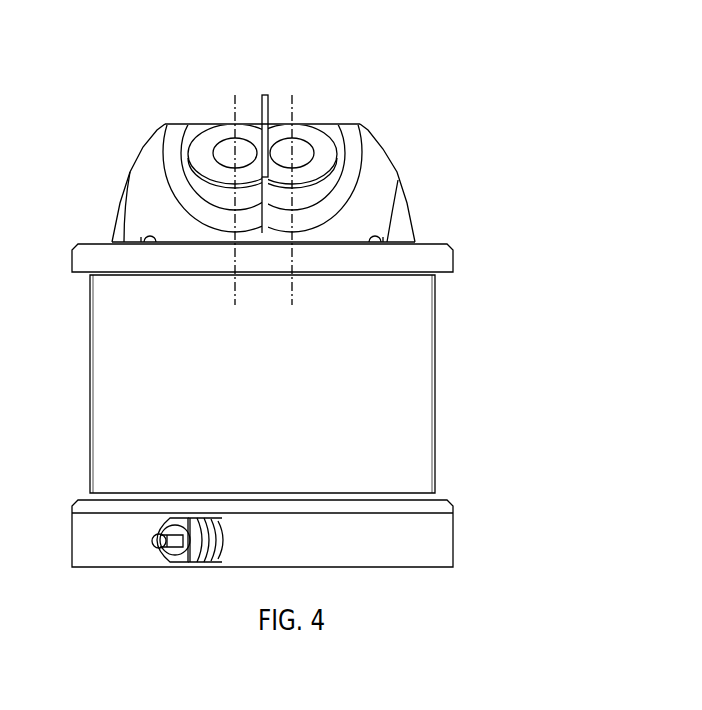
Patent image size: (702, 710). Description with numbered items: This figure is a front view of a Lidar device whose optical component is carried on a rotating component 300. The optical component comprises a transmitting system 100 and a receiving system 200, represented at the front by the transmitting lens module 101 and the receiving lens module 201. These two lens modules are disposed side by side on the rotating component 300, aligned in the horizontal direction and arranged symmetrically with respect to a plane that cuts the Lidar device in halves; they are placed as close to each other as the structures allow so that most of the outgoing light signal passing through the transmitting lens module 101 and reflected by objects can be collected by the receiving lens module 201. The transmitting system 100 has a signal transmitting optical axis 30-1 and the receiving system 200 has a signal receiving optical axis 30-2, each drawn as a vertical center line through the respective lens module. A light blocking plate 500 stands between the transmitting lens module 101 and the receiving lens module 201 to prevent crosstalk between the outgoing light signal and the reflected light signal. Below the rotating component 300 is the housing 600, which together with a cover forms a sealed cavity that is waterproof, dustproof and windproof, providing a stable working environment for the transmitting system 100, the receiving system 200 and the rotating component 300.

The transmitting system 100 is at (157, 67).
The transmitting lens module 101 is at (234, 148).
The receiving system 200 is at (373, 68).
The receiving lens module 201 is at (293, 148).
The rotating component 300 is at (375, 175).
The light blocking plate 500 is at (265, 97).
The housing 600 is at (408, 383).
The signal transmitting optical axis 30-1 is at (224, 215).
The signal receiving optical axis 30-2 is at (303, 215).